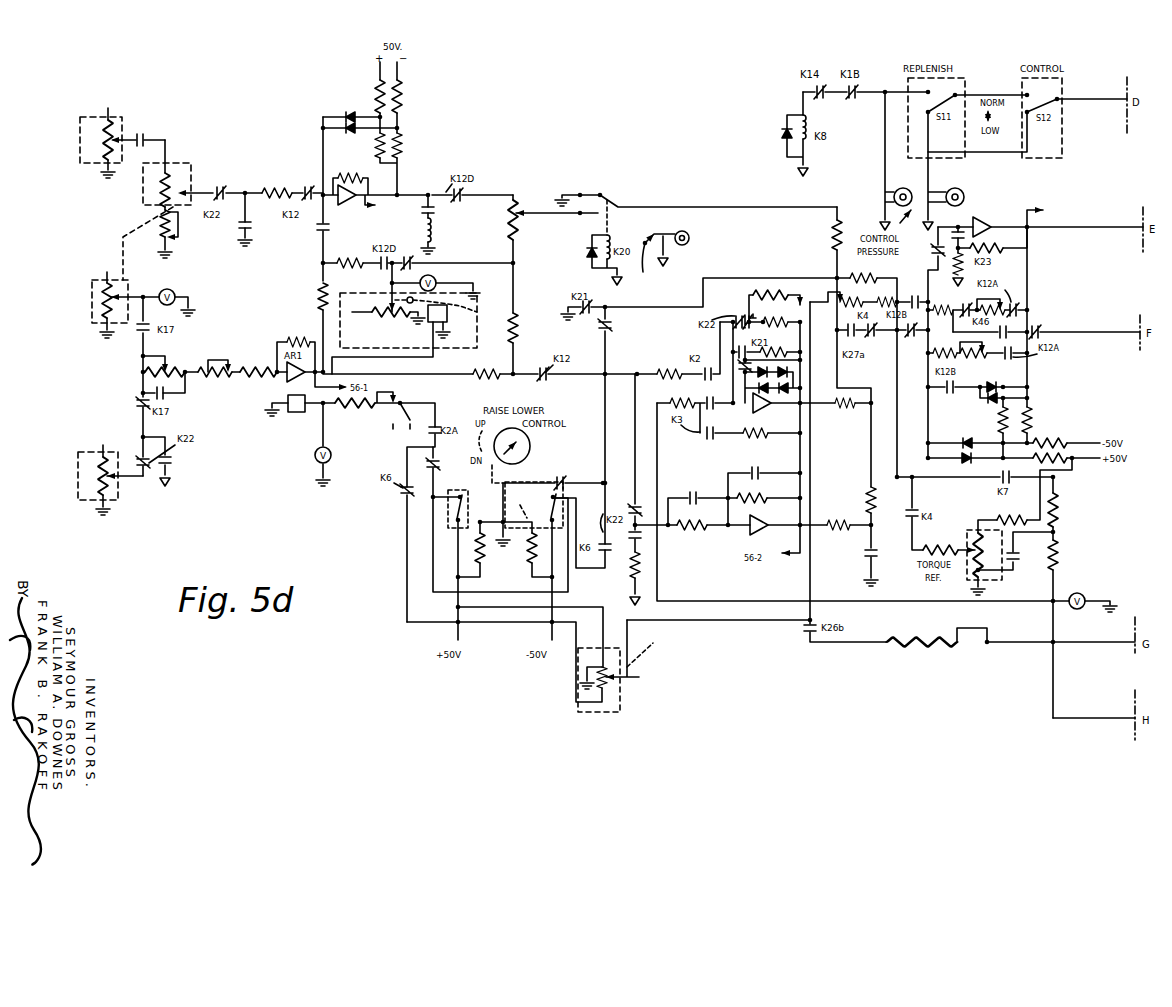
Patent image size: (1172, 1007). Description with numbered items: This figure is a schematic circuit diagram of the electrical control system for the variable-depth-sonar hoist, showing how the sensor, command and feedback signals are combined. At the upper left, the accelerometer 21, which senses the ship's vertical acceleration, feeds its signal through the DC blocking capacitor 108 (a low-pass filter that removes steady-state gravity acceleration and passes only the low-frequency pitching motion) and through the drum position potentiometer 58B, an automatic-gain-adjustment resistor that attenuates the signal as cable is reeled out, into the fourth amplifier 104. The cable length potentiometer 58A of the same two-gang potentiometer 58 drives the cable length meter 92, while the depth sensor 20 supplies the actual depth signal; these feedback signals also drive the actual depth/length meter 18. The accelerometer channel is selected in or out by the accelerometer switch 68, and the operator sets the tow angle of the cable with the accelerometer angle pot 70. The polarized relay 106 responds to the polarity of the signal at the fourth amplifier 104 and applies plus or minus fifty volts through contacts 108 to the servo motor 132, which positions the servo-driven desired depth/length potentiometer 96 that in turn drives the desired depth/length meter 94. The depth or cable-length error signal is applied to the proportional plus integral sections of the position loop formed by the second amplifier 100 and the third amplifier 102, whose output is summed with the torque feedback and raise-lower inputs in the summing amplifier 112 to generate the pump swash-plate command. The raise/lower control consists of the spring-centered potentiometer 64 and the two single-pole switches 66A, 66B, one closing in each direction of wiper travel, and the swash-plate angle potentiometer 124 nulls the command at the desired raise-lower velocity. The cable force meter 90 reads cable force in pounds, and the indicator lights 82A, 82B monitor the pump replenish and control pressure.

The accelerometer 21 is at (80, 143).
The DC blocking capacitor 108 is at (141, 136).
The drum position potentiometer 58B is at (185, 162).
The cable length potentiometer 58A is at (88, 300).
The cable length meter 92 is at (178, 293).
The depth sensor 20 is at (118, 485).
The actual depth/length meter 18 is at (333, 459).
The amplifier AR4 104 is at (347, 206).
The polarized relay 106 is at (439, 230).
The desired depth/length meter 94 is at (438, 276).
The desired depth/length potentiometer 96 is at (390, 321).
The servo motor 132 is at (447, 312).
The accelerometer angle pot 70 is at (511, 197).
The accelerometer switch 68 is at (652, 270).
The two-gang potentiometer 58 is at (776, 306).
The amplifier AR3 102 is at (766, 409).
The amplifier AR2 100 is at (748, 533).
The summing amplifier AR5 112 is at (984, 223).
The indicator light 82A is at (898, 161).
The indicator light 82B is at (960, 192).
The pump swash-plate angle potentiometer 124 is at (620, 688).
The cable force meter 90 is at (1069, 609).
The spring-centered potentiometer 64 is at (502, 540).
The single-pole switch 66A is at (435, 465).
The single-pole switch 66B is at (546, 495).